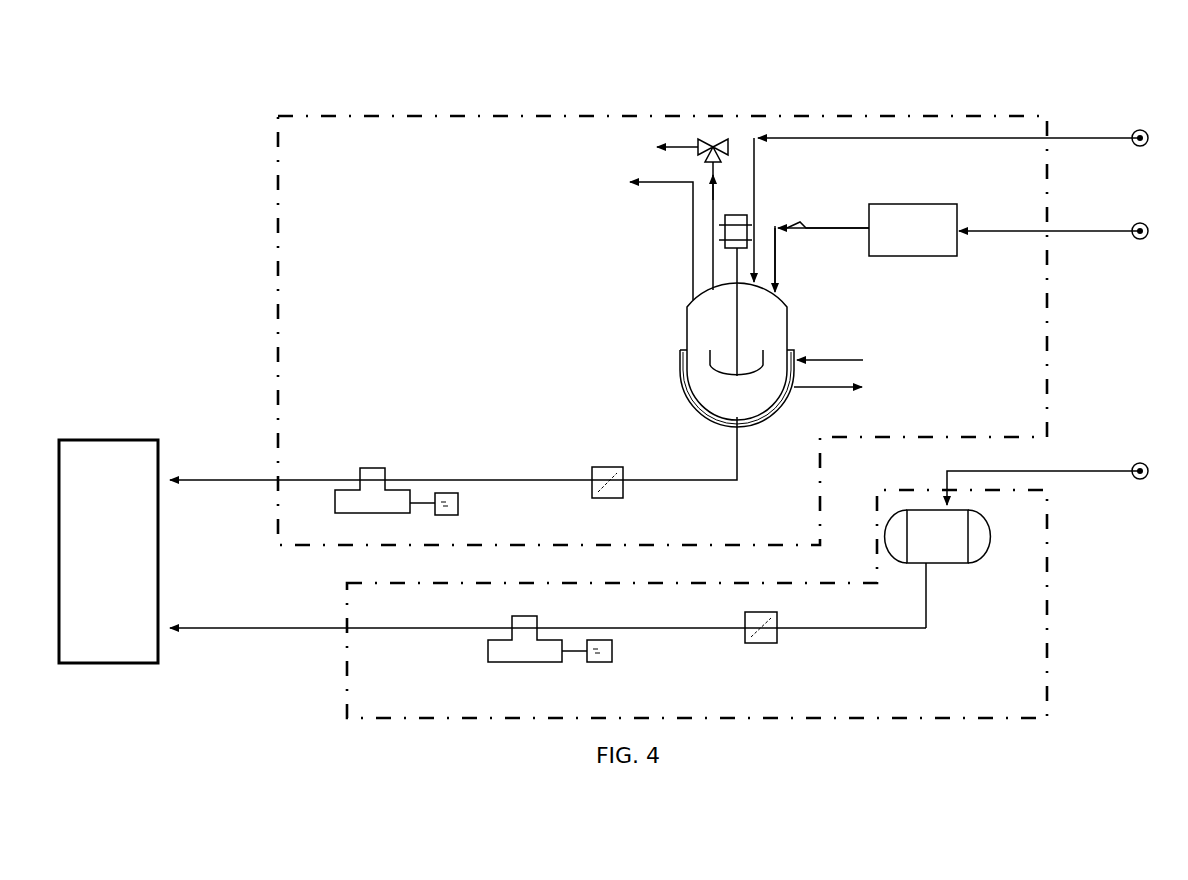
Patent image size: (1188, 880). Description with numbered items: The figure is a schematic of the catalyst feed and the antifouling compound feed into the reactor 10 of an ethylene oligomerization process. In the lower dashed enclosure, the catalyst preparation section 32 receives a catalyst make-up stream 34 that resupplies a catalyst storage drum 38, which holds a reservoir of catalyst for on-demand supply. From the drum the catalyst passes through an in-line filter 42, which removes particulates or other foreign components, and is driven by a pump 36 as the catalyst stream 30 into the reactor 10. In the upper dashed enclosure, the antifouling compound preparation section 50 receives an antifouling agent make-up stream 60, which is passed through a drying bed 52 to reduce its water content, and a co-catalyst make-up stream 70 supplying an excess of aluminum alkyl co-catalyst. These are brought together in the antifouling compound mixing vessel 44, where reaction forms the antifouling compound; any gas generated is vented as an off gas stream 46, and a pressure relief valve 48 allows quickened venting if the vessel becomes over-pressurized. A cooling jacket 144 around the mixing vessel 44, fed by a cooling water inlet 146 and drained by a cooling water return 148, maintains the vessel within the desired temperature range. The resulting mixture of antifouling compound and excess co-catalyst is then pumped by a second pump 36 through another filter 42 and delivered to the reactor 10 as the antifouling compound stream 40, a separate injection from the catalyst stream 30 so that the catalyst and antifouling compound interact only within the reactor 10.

The reactor 10 is at (128, 510).
The catalyst stream 30 is at (200, 632).
The catalyst preparation section 32 is at (905, 742).
The catalyst make-up stream 34 is at (1092, 470).
The pump 36 is at (370, 497).
The catalyst storage drum 38 is at (940, 538).
The antifouling compound stream 40 is at (205, 478).
The filter 42 is at (604, 474).
The antifouling compound mixing vessel 44 is at (693, 330).
The off gas stream 46 is at (668, 184).
The pressure relief valve 48 is at (713, 138).
The antifouling compound preparation section 50 is at (470, 104).
The drying bed 52 is at (918, 240).
The antifouling agent make-up stream 60 is at (1090, 233).
The co-catalyst make-up stream 70 is at (1100, 138).
The cooling jacket 144 is at (763, 416).
The cooling water inlet 146 is at (821, 360).
The cooling water return 148 is at (813, 390).